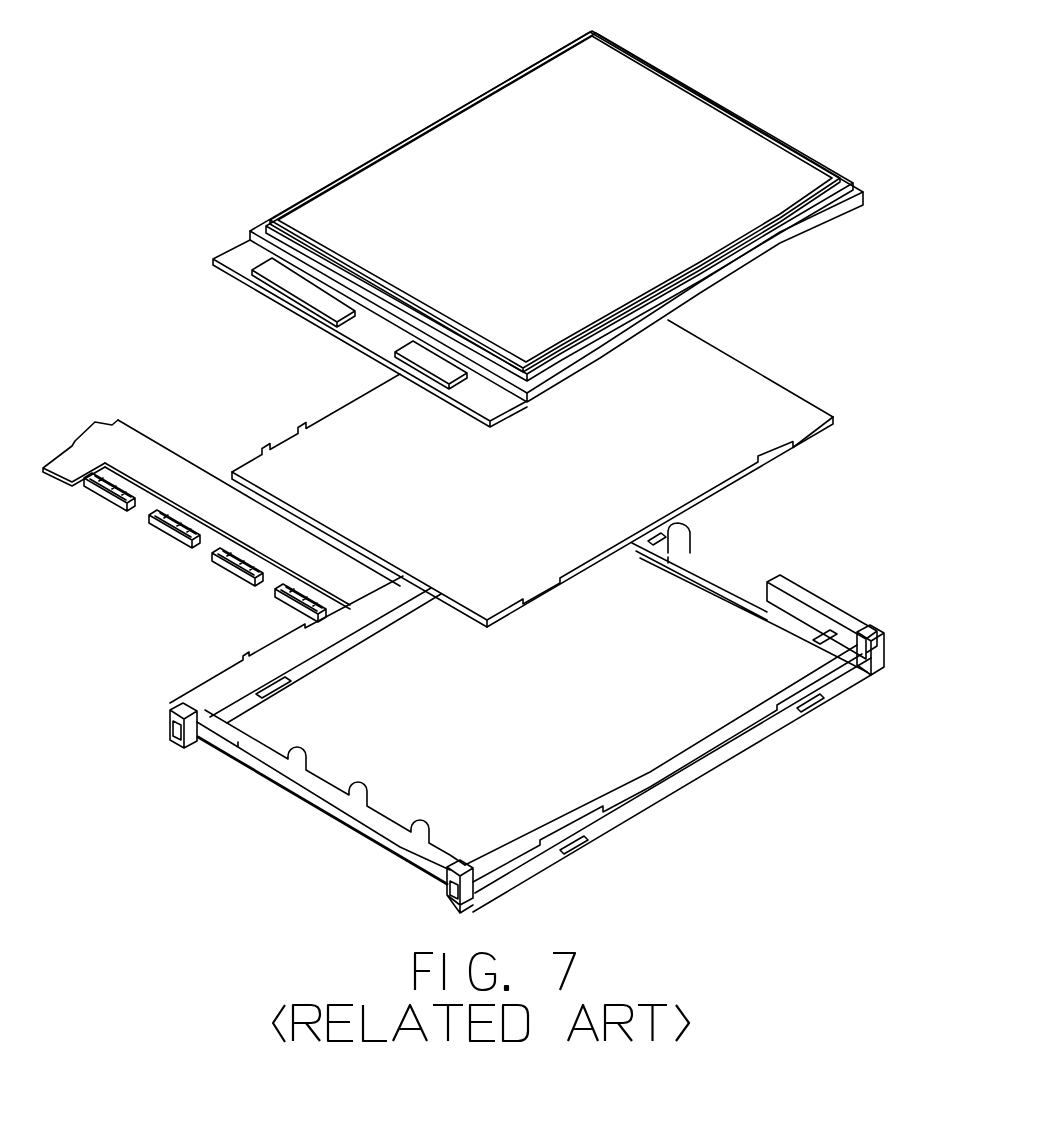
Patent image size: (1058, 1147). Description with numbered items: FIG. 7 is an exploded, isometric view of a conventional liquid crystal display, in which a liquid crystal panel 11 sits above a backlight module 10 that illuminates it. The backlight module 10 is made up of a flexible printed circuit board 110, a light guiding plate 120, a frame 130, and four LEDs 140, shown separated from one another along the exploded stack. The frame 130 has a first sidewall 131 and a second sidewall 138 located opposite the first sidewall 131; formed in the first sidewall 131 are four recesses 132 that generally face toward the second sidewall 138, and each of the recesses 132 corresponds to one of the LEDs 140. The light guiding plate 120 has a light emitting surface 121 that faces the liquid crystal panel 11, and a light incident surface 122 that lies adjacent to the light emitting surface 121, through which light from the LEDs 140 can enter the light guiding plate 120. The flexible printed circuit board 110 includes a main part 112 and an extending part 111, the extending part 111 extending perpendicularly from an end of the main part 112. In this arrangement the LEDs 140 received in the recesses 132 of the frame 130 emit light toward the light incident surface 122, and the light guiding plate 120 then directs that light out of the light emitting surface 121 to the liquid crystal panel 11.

The liquid crystal panel 11 is at (820, 186).
The backlight module 10 is at (885, 305).
The light guiding plate 120 is at (528, 469).
The light emitting surface 121 is at (690, 345).
The light incident surface 122 is at (232, 472).
The frame 130 is at (525, 714).
The first sidewall 131 is at (223, 742).
The recesses 132 is at (390, 808).
The second sidewall 138 is at (793, 588).
The flexible printed circuit board 110 is at (221, 524).
The extending part 111 is at (83, 460).
The main part 112 is at (155, 478).
The LEDs 140 is at (242, 567).